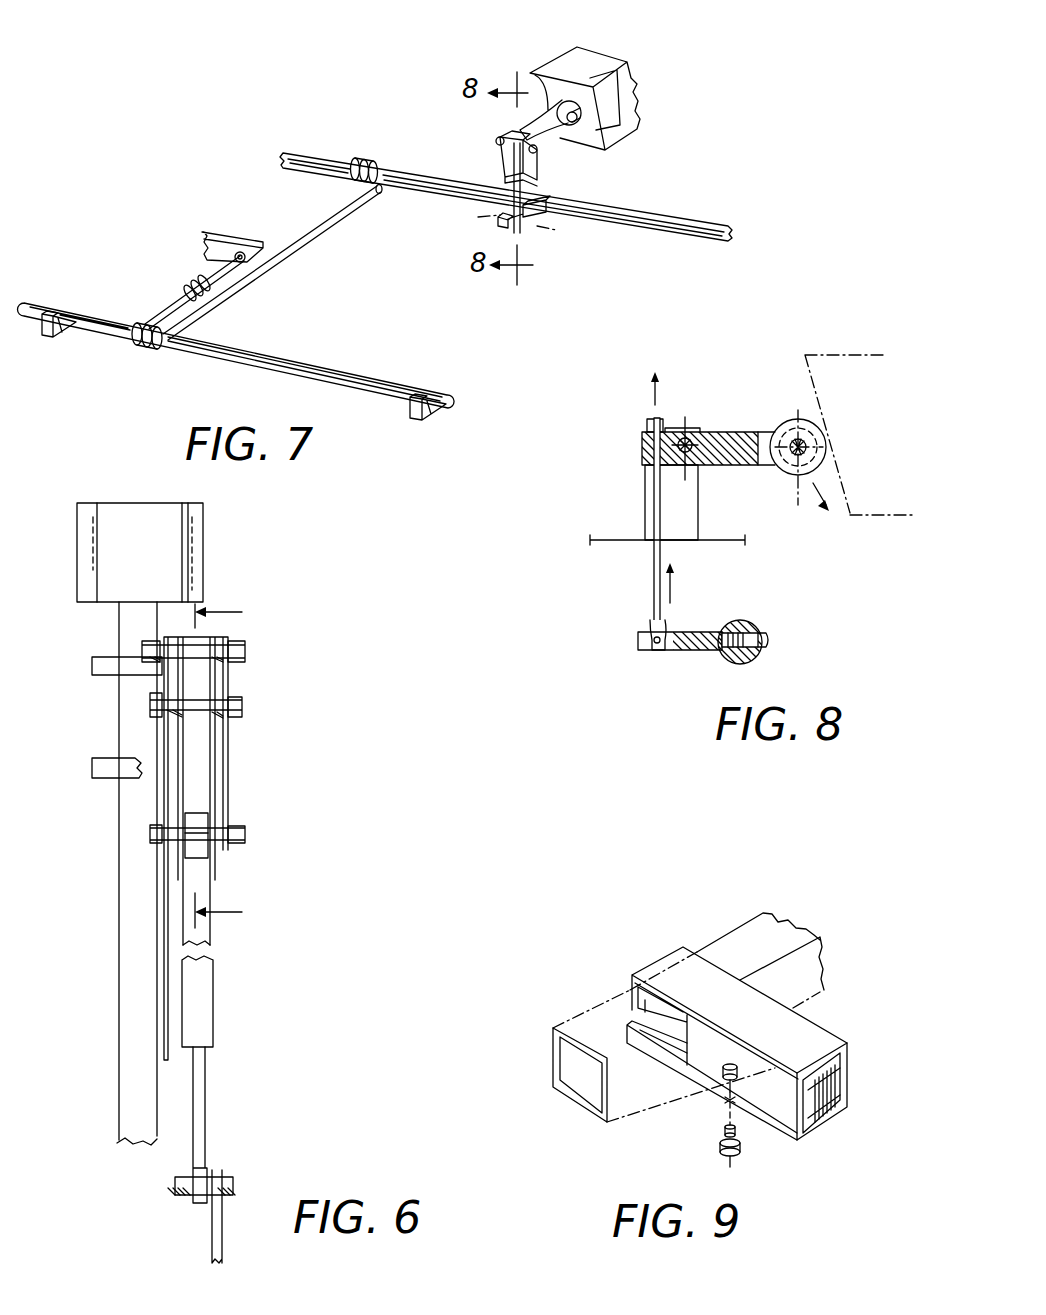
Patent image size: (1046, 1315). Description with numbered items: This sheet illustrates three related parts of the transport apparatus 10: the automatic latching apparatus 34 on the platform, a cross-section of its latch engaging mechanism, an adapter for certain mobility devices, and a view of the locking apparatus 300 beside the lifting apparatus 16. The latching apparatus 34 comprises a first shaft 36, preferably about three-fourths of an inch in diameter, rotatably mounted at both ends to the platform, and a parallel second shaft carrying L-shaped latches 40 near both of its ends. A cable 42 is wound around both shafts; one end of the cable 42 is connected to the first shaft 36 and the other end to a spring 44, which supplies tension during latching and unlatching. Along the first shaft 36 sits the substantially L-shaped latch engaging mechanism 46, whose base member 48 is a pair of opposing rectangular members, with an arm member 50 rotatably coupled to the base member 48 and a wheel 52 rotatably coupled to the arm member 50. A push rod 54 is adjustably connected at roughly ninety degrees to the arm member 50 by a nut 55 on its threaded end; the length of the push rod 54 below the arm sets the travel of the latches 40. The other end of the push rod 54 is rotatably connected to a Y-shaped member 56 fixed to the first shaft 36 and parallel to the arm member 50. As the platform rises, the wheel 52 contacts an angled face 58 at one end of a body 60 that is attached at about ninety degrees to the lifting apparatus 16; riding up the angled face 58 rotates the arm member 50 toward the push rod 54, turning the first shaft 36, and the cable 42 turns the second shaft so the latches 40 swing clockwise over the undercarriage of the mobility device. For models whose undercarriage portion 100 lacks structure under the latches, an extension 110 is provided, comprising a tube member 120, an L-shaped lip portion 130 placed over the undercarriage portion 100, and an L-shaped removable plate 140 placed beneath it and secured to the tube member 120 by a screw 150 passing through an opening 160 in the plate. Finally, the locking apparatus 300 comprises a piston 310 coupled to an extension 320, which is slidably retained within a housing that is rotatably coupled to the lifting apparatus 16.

In FIG. 6, the transport apparatus 10 is at (237, 762).
In FIG. 6, the lifting apparatus 16 is at (286, 916).
In FIG. 7, the automatic latching apparatus 34 is at (100, 272).
In FIG. 7, the first shaft 36 is at (668, 222).
In FIG. 8, the first shaft 36 is at (752, 625).
In FIG. 7, the L-shaped latches 40 is at (50, 340).
In FIG. 7, the cable 42 is at (330, 222).
In FIG. 7, the spring 44 is at (190, 290).
In FIG. 7, the latch engaging mechanism 46 is at (482, 153).
In FIG. 8, the latch engaging mechanism 46 is at (608, 482).
In FIG. 7, the base member 48 is at (545, 170).
In FIG. 8, the base member 48 is at (685, 493).
In FIG. 7, the arm member 50 is at (532, 92).
In FIG. 8, the arm member 50 is at (722, 432).
In FIG. 7, the wheel 52 is at (552, 96).
In FIG. 8, the wheel 52 is at (788, 424).
In FIG. 7, the push rod 54 is at (500, 203).
In FIG. 8, the push rod 54 is at (650, 574).
In FIG. 8, the nut 55 is at (645, 424).
In FIG. 7, the Y-shaped member 56 is at (540, 222).
In FIG. 8, the Y-shaped member 56 is at (690, 652).
In FIG. 8, the angled face 58 is at (875, 517).
In FIG. 7, the body 60 is at (628, 100).
In FIG. 9, the undercarriage portion 100 is at (760, 930).
In FIG. 9, the extension 110 is at (858, 956).
In FIG. 9, the tube member 120 is at (810, 1022).
In FIG. 9, the L-shaped lip portion 130 is at (631, 972).
In FIG. 9, the L-shaped removable plate 140 is at (720, 1092).
In FIG. 9, the screw 150 is at (740, 1130).
In FIG. 9, the opening 160 is at (720, 1077).
In FIG. 6, the locking apparatus 300 is at (280, 765).
In FIG. 6, the piston 310 is at (197, 1105).
In FIG. 6, the extension 320 is at (245, 650).